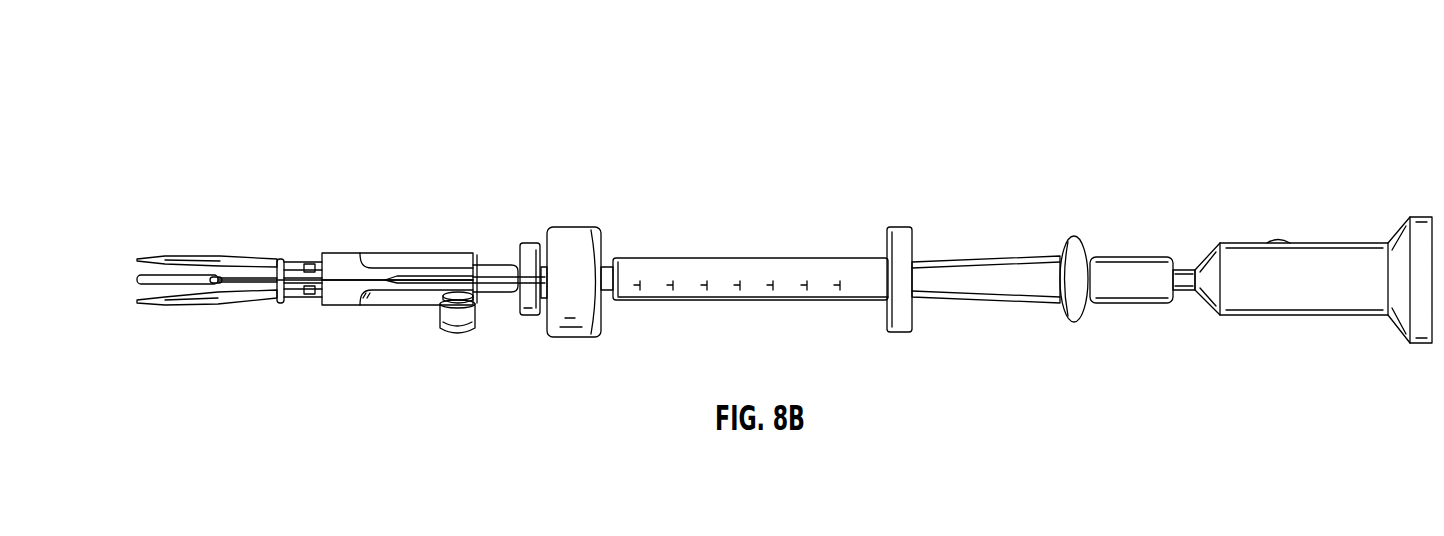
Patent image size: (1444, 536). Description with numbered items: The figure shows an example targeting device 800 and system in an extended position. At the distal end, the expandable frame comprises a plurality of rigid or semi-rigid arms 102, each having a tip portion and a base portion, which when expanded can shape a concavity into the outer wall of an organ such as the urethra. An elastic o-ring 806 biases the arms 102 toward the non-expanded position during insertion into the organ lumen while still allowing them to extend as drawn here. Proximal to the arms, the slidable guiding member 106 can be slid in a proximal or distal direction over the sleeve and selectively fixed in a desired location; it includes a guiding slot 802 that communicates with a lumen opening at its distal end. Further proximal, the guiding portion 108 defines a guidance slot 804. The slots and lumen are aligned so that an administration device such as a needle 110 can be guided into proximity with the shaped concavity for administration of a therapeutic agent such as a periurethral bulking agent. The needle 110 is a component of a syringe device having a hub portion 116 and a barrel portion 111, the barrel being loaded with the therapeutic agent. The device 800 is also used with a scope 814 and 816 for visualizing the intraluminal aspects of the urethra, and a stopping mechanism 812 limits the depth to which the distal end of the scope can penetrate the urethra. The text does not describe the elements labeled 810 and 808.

The device 800 is at (185, 154).
The arms 102 is at (168, 278).
The scope 816 is at (230, 280).
The elastic o-ring 806 is at (282, 303).
The connector 810 is at (305, 266).
The slidable guiding member 106 is at (350, 267).
The guiding slot 802 is at (415, 283).
The port 808 is at (458, 334).
The needle 110 is at (226, 283).
The guiding portion 108 is at (532, 245).
The guidance slot 804 is at (545, 312).
The hub portion 116 is at (585, 228).
The barrel portion 111 is at (723, 296).
The stopping mechanism 812 is at (1125, 297).
The scope 814 is at (1294, 292).